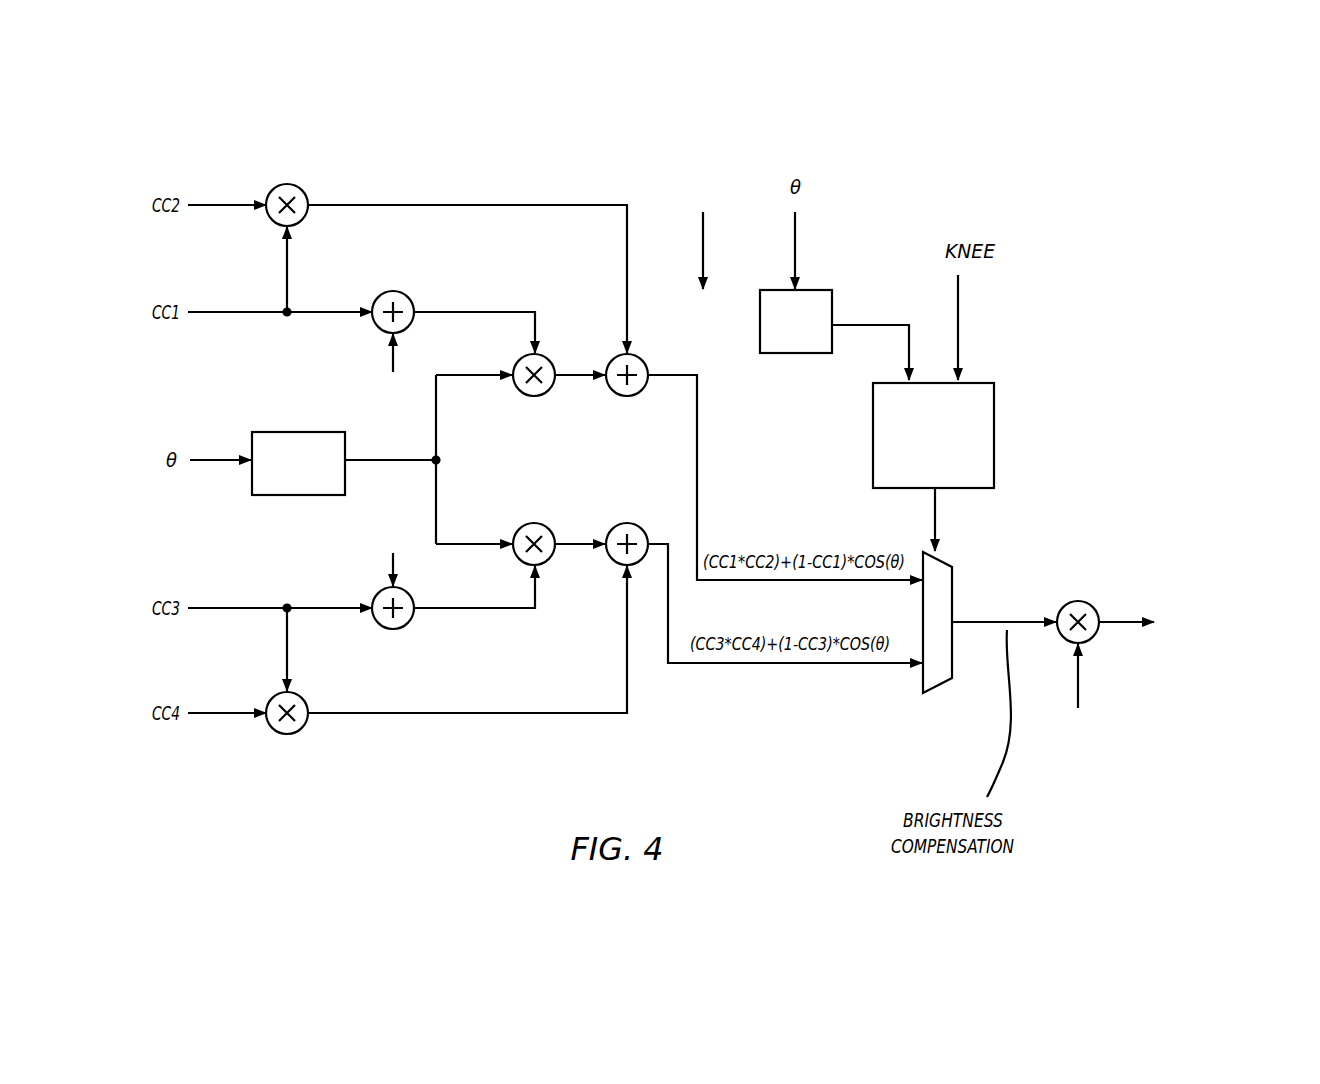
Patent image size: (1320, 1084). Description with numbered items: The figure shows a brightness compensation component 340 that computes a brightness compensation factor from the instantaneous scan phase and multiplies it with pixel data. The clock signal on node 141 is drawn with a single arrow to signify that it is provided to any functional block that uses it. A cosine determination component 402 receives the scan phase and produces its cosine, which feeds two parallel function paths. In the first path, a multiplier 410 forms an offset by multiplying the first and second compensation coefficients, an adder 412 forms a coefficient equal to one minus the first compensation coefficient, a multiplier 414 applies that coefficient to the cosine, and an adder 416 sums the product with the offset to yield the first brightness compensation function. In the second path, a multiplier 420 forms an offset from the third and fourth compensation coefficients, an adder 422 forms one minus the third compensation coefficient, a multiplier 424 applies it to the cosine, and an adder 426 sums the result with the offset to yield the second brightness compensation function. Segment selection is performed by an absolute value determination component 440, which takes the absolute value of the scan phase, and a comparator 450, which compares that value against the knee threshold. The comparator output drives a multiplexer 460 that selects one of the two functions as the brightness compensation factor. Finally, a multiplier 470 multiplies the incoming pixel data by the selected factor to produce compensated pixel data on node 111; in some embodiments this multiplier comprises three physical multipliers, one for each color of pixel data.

The brightness compensation component 340 is at (1174, 189).
The clock signal node 141 is at (703, 250).
The cosine determination component 402 is at (294, 432).
The multiplier 410 is at (268, 226).
The adder 412 is at (373, 334).
The multiplier 414 is at (517, 391).
The adder 416 is at (609, 391).
The multiplier 420 is at (270, 697).
The adder 422 is at (377, 594).
The multiplier 424 is at (517, 529).
The adder 426 is at (609, 529).
The absolute value determination component 440 is at (787, 354).
The comparator 450 is at (994, 416).
The multiplexer 460 is at (941, 688).
The multiplier 470 is at (1061, 610).
The compensated pixel data node 111 is at (1136, 603).